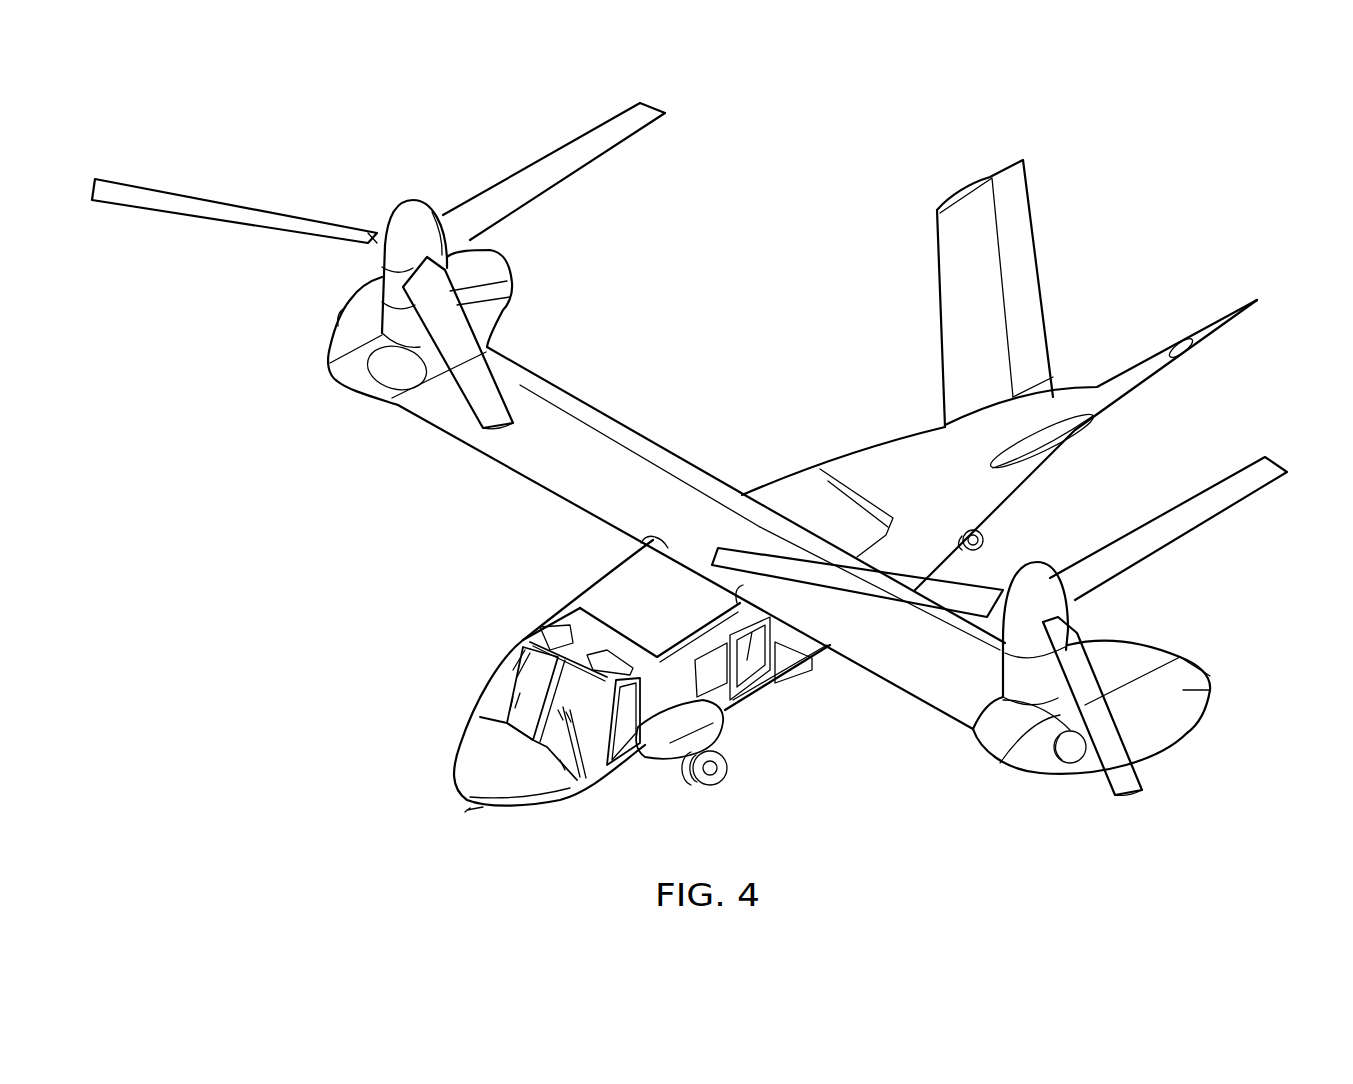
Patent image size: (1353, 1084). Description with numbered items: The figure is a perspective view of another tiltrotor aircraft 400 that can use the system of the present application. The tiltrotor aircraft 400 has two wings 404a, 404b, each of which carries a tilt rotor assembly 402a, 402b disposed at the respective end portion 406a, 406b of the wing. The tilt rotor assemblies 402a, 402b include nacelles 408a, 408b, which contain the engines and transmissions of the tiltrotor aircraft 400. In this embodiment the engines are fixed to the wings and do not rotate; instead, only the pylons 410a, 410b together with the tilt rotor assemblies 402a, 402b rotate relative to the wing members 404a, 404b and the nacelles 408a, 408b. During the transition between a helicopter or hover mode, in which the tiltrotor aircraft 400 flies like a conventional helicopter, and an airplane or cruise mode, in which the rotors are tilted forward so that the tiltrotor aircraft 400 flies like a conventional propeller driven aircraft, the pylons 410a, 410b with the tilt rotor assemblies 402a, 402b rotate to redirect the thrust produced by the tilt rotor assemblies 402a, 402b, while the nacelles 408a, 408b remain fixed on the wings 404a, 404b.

The tiltrotor aircraft 400 is at (1110, 144).
The tilt rotor assembly 402a is at (540, 160).
The tilt rotor assembly 402b is at (1242, 499).
The wing 404a is at (557, 477).
The wing 404b is at (878, 660).
The end portion 406a is at (507, 245).
The end portion 406b is at (1224, 660).
The nacelle 408a is at (325, 378).
The nacelle 408b is at (1153, 716).
The pylon 410a is at (390, 290).
The pylon 410b is at (1015, 650).